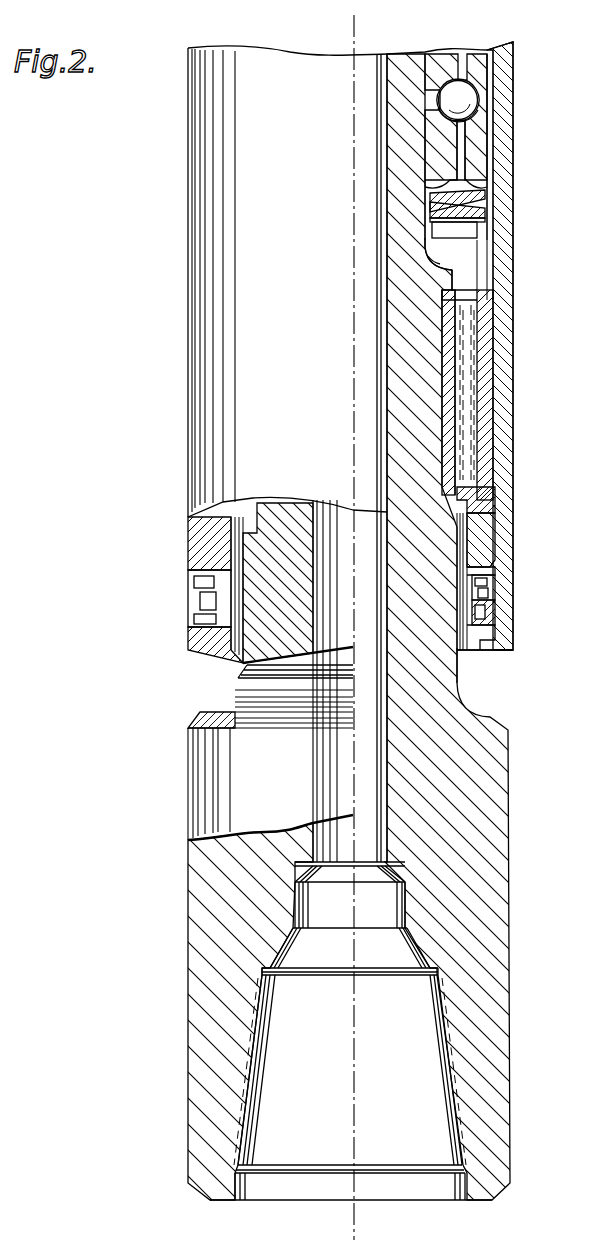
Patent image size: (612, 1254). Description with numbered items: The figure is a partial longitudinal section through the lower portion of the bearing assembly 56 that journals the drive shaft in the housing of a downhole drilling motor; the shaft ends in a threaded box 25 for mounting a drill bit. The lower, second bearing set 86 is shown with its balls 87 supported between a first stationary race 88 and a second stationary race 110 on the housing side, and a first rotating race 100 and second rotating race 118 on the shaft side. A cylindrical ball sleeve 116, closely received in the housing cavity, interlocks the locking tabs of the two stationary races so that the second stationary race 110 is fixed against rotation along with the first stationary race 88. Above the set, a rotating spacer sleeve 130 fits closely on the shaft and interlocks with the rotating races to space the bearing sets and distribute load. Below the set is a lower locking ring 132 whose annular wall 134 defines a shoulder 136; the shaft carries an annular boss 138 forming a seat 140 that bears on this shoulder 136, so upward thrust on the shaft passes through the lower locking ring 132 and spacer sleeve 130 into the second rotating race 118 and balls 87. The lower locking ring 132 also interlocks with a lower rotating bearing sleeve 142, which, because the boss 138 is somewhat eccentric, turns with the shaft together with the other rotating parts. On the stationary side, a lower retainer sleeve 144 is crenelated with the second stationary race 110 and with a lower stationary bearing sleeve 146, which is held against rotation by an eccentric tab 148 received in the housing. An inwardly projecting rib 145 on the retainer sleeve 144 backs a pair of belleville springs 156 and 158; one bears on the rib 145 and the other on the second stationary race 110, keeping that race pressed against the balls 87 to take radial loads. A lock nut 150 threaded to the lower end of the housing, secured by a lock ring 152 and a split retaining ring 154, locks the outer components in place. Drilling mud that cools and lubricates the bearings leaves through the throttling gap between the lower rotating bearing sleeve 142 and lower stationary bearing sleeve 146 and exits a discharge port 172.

The threaded box 25 is at (396, 1088).
The bearing assembly 56 is at (404, 80).
The second bearing set 86 is at (406, 125).
The balls 87 is at (474, 107).
The first stationary race 88 is at (478, 70).
The first rotating race 100 is at (440, 66).
The second stationary race 110 is at (476, 151).
The ball sleeve 116 is at (494, 121).
The second rotating race 118 is at (437, 152).
The rotating spacer sleeve 130 is at (424, 233).
The lower locking ring 132 is at (432, 256).
The annular wall 134 is at (438, 284).
The shoulder 136 is at (450, 268).
The annular boss 138 is at (448, 320).
The seat 140 is at (446, 304).
The lower rotating bearing sleeve 142 is at (446, 363).
The lower retainer sleeve 144 is at (488, 270).
The inwardly projecting rib 145 is at (487, 234).
The lower stationary bearing sleeve 146 is at (488, 377).
The eccentric tab 148 is at (490, 494).
The lock nut 150 is at (480, 544).
The lock ring 152 is at (480, 593).
The split retaining ring 154 is at (498, 622).
The belleville spring 156 is at (466, 192).
The belleville spring 158 is at (481, 215).
The discharge port 172 is at (457, 649).